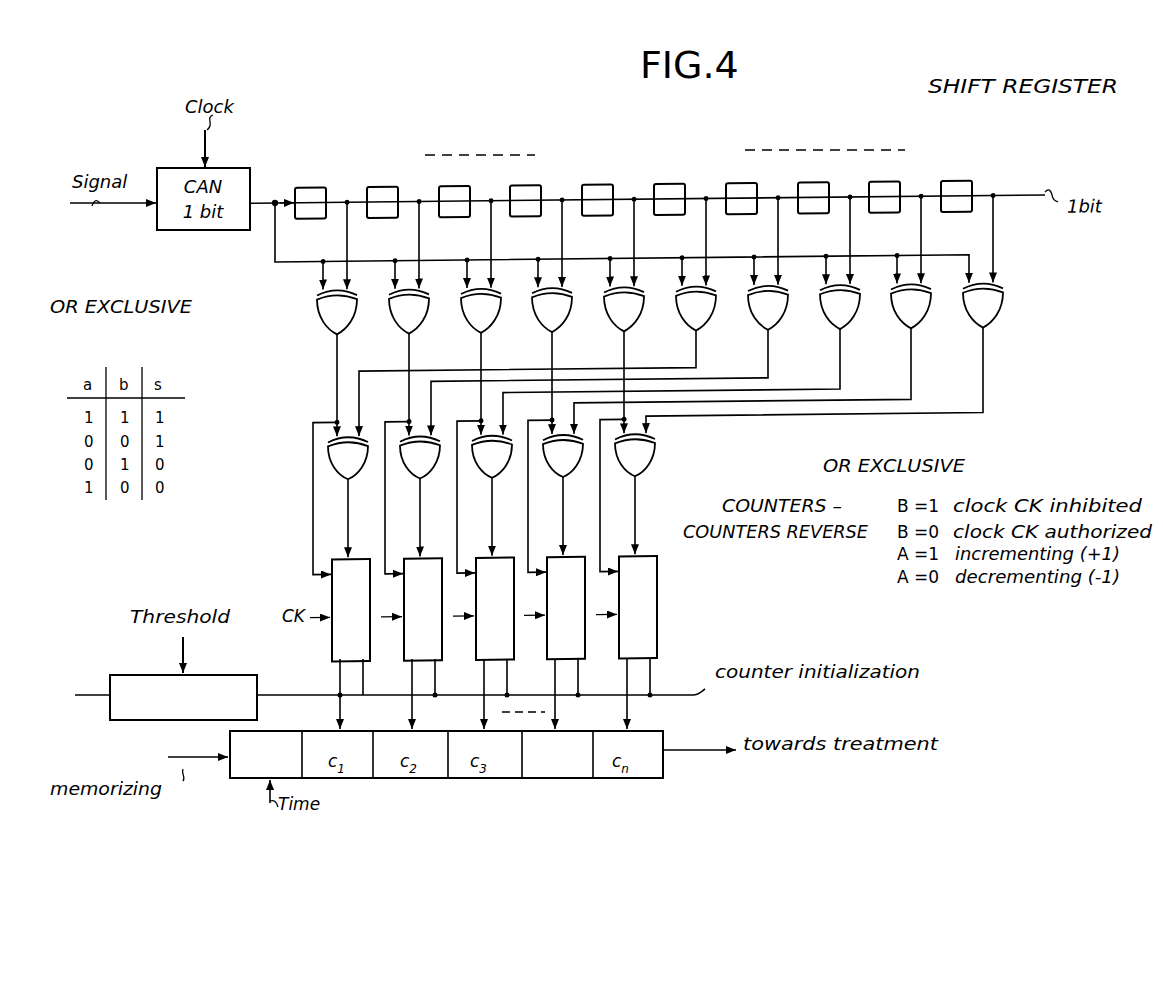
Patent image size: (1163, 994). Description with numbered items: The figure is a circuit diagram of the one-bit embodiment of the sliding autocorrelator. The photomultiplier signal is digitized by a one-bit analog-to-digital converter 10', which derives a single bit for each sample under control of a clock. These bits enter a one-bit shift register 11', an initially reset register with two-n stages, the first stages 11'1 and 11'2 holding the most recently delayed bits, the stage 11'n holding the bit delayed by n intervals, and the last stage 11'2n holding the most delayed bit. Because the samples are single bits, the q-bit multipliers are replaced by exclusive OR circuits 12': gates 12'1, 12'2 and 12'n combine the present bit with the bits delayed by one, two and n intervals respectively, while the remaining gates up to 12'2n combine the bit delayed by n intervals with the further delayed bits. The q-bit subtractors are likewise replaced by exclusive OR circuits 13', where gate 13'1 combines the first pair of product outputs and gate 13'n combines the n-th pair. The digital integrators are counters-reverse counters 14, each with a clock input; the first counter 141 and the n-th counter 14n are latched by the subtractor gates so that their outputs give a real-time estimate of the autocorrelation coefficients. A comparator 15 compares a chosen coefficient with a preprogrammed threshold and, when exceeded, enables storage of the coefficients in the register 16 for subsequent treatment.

The one-bit analog-to-digital converter 10' is at (203, 223).
The one-bit shift register 11' is at (662, 195).
The first shift register stage 11'1 is at (304, 180).
The second shift register stage 11'2 is at (375, 180).
The n-th shift register stage 11'n is at (588, 176).
The last (2n-th) shift register stage 11'2n is at (966, 171).
The exclusive OR circuits 12' is at (586, 317).
The first exclusive OR circuit 12'1 is at (314, 363).
The second exclusive OR circuit 12'2 is at (393, 362).
The n-th exclusive OR circuit 12'n is at (609, 360).
The 2n-th exclusive OR circuit 12'2n is at (854, 358).
The subtractor exclusive OR circuits 13' is at (687, 493).
The first subtractor exclusive OR gate 13'1 is at (341, 497).
The n-th subtractor exclusive OR gate 13'n is at (656, 494).
The counters-reverse counters 14 is at (554, 601).
The first counter-reverse counter 141 is at (332, 653).
The n-th counter-reverse counter 14n is at (660, 634).
The comparator 15 is at (105, 676).
The memory register 16 is at (234, 780).